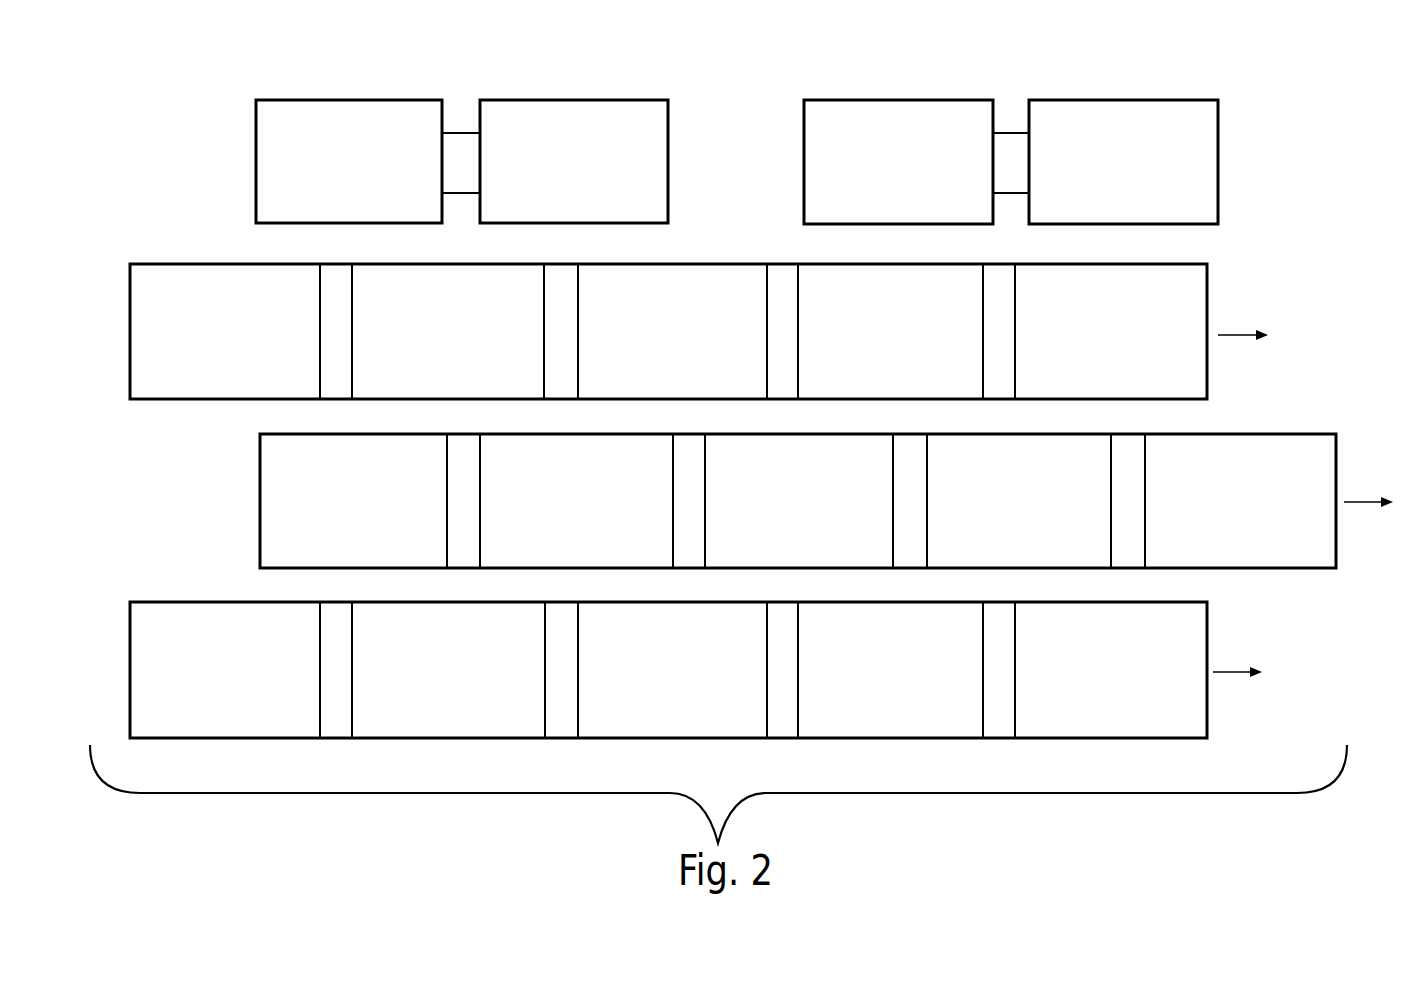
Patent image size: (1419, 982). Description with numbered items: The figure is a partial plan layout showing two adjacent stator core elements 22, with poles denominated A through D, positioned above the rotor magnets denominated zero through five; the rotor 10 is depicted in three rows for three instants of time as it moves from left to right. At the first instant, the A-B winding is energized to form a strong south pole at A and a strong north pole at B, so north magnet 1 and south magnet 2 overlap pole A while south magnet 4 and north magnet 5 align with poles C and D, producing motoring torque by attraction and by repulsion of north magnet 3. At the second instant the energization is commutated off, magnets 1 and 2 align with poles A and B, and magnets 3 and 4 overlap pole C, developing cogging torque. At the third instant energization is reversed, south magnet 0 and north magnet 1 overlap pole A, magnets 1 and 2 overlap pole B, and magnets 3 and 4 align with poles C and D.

The stator core element 22 is at (575, 88).
The magnetic scale pole array 10 is at (167, 413).
The south magnet 0 is at (266, 670).
The north magnet 1 is at (378, 501).
The south magnet 2 is at (559, 501).
The north magnet 3 is at (780, 501).
The south magnet 4 is at (956, 501).
The north magnet 5 is at (1128, 416).